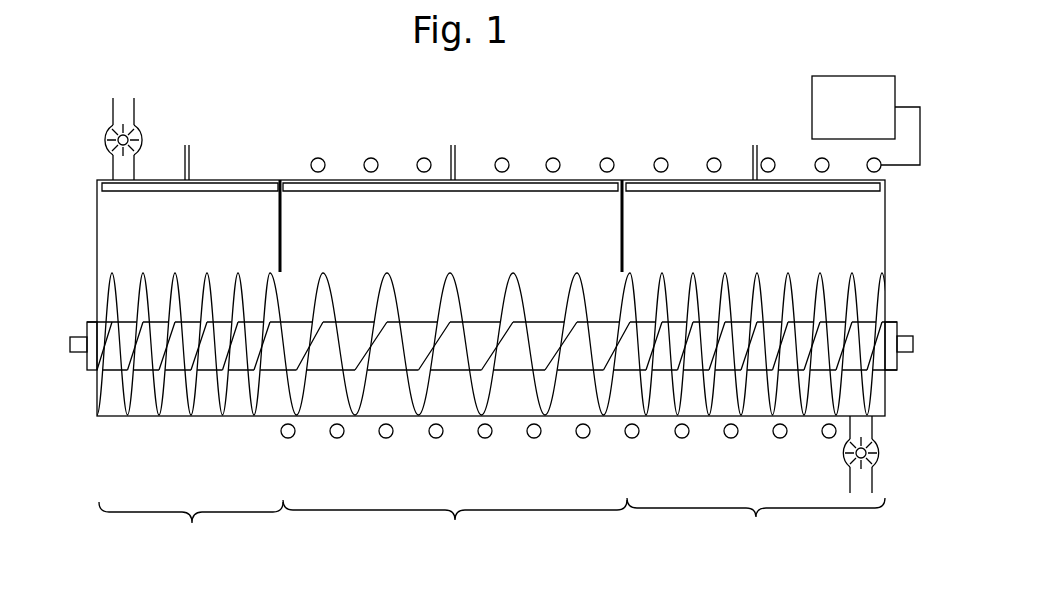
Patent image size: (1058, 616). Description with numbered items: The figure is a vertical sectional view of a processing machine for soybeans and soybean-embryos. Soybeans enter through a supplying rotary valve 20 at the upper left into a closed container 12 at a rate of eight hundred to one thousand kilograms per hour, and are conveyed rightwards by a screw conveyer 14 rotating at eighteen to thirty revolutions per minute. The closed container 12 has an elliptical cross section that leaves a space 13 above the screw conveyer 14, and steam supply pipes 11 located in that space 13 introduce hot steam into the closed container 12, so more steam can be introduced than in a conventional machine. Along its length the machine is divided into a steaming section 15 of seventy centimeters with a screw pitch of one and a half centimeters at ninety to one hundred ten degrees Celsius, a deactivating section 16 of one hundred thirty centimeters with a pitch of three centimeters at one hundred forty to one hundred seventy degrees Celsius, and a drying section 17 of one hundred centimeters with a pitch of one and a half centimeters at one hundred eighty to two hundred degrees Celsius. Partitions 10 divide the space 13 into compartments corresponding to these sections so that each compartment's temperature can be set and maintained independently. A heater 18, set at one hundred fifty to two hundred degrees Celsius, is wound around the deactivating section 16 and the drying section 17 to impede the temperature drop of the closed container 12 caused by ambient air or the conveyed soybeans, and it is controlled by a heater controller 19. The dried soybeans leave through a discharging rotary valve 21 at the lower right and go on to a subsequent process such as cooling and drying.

The partition 10 is at (278, 207).
The steam supply pipe 11 is at (95, 180).
The closed container 12 is at (95, 237).
The space 13 is at (187, 240).
The screw conveyer 14 is at (87, 370).
The steaming section 15 is at (191, 530).
The deactivating section 16 is at (455, 524).
The drying section 17 is at (756, 521).
The heater 18 is at (538, 437).
The heater controller 19 is at (866, 120).
The supplying rotary valve 20 is at (134, 128).
The discharging rotary valve 21 is at (843, 455).